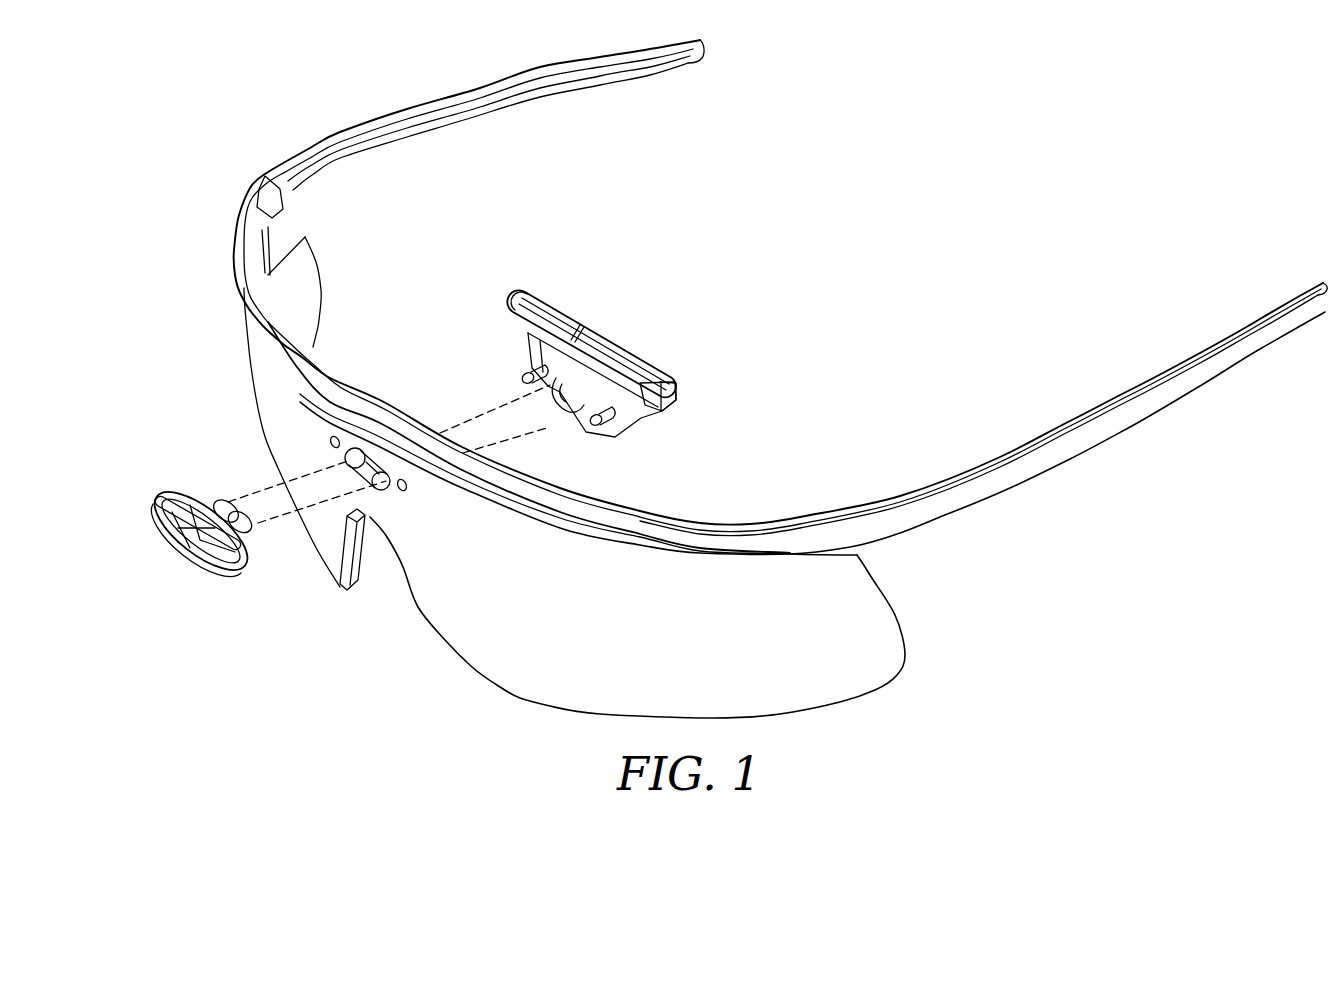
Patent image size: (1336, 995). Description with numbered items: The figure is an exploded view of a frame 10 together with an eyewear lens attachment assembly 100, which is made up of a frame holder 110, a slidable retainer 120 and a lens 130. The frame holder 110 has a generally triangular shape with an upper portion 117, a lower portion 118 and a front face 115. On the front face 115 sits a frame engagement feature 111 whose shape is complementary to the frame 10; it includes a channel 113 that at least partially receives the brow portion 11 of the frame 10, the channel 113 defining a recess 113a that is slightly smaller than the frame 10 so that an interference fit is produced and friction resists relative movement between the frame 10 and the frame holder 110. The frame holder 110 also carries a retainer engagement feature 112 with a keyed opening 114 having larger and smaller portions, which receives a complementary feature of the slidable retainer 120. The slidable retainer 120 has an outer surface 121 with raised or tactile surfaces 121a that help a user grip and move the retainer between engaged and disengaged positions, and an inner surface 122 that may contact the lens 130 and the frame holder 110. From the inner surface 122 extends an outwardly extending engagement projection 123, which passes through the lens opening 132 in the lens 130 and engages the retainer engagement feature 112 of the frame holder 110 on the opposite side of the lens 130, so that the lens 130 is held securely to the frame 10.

The eyewear lens attachment assembly 100 is at (174, 174).
The frame 10 is at (1012, 494).
The brow portion 11 is at (345, 398).
The frame holder 110 is at (562, 296).
The frame engagement feature 111 is at (678, 397).
The retainer engagement feature 112 is at (622, 410).
The channel 113 is at (650, 376).
The recess 113a is at (580, 345).
The opening 114 is at (580, 405).
The front face 115 is at (535, 352).
The upper portion 117 is at (522, 300).
The lower portion 118 is at (545, 389).
The slidable retainer 120 is at (122, 489).
The outer surface 121 is at (204, 558).
The raised or tactile surfaces 121a is at (174, 542).
The inner surface 122 is at (180, 495).
The outwardly extending engagement projection 123 is at (219, 503).
The lens 130 is at (912, 661).
The lens opening 132 is at (390, 500).